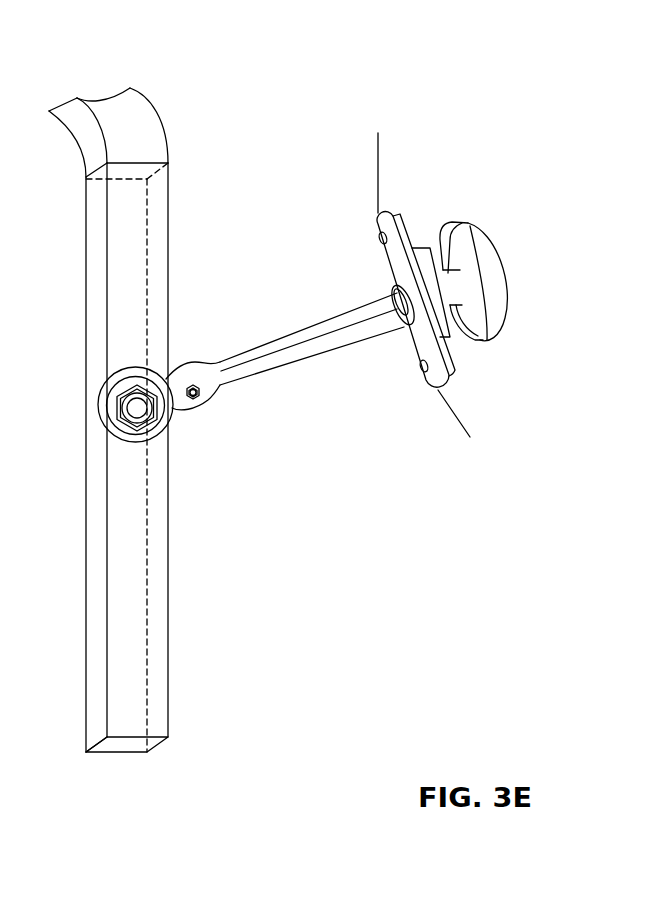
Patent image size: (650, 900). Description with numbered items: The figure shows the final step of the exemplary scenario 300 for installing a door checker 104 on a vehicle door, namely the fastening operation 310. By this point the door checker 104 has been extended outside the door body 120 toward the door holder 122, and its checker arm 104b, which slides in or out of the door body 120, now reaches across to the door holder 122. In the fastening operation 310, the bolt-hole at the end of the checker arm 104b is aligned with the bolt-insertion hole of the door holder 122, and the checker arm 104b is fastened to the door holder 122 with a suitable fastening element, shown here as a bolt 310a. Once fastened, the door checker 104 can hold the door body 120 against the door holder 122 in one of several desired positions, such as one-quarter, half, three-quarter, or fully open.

The exemplary scenario 300 is at (280, 383).
The door holder 122 is at (99, 420).
The fastening operation 310 is at (172, 356).
The bolt 310a is at (177, 415).
The checker arm 104b is at (319, 342).
The door body 120 is at (424, 267).
The door checker 104 is at (453, 287).